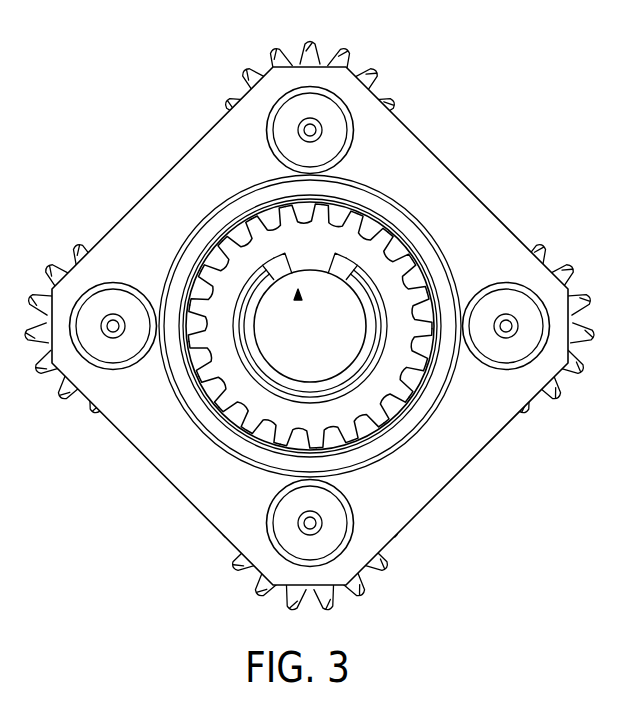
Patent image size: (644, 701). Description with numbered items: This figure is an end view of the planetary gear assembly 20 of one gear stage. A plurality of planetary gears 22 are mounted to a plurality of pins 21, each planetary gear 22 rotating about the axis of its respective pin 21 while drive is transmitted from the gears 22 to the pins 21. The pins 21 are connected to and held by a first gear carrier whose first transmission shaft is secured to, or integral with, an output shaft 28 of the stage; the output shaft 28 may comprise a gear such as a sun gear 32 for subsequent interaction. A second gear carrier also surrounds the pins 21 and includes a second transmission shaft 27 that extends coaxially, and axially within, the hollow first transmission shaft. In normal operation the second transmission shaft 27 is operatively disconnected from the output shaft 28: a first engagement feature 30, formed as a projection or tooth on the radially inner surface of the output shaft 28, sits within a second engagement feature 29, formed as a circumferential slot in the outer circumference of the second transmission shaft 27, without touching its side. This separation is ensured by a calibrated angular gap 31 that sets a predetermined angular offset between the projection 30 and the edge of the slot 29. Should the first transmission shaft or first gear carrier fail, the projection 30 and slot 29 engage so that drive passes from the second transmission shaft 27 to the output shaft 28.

The planetary gear assembly 20 is at (484, 86).
The pin 21 is at (292, 130).
The planetary gear 22 is at (250, 71).
The second transmission shaft 27 is at (362, 366).
The output shaft 28 is at (232, 280).
The second engagement feature 29 is at (298, 298).
The first engagement feature 30 is at (323, 256).
The angular gap 31 is at (343, 275).
The sun gear 32 is at (265, 319).